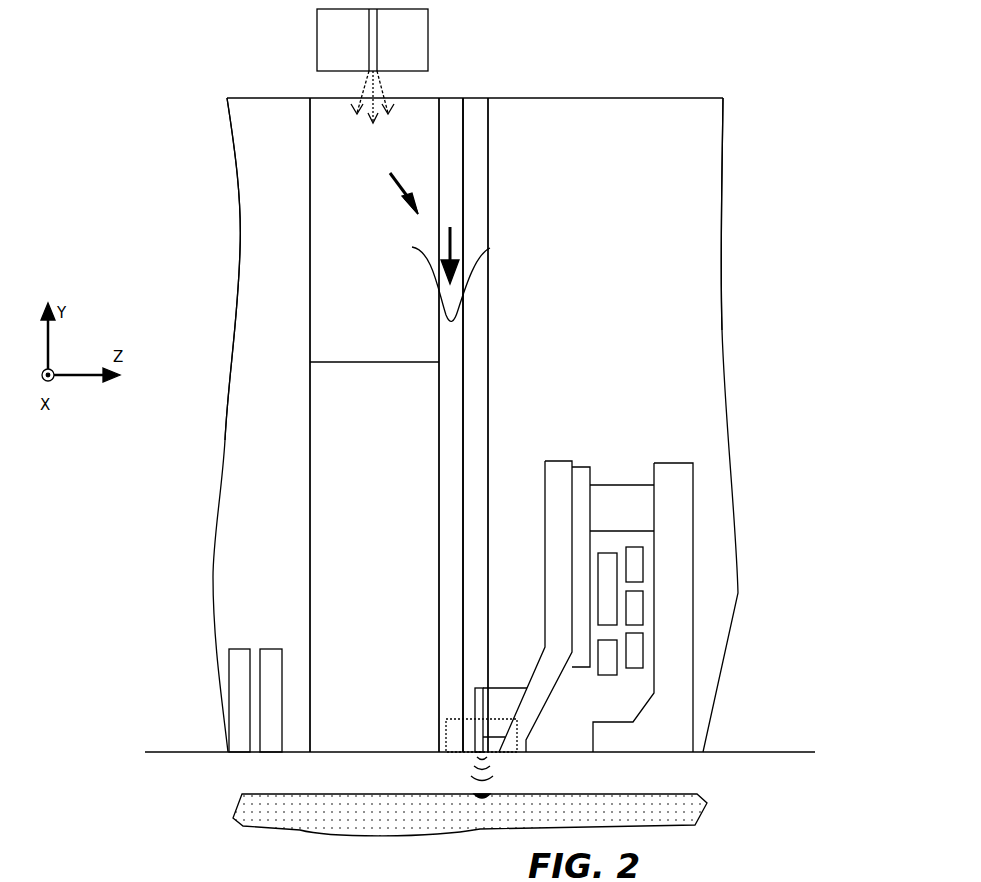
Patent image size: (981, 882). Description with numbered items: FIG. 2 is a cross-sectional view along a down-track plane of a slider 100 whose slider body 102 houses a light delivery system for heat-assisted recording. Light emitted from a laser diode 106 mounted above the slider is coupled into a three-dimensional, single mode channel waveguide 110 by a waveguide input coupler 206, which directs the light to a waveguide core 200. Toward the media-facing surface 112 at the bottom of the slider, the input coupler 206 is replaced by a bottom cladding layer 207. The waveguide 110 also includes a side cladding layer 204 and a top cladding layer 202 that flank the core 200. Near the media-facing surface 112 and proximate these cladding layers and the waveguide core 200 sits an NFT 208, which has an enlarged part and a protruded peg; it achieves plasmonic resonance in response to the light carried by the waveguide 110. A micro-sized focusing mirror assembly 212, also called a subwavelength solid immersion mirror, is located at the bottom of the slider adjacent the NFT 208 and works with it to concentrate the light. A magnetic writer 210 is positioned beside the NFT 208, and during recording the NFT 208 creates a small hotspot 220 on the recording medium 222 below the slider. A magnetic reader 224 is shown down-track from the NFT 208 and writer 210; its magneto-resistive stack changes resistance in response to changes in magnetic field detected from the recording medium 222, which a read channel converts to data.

The deposition system 100 is at (176, 206).
The slider body 102 is at (670, 97).
The laser diode 106 is at (316, 28).
The channel waveguide 110 is at (528, 200).
The media-facing surface 112 is at (800, 754).
The waveguide core 200 is at (457, 108).
The top cladding layer 202 is at (528, 120).
The side cladding layer 204 is at (487, 105).
The waveguide input coupler 206 is at (324, 125).
The bottom cladding layer 207 is at (310, 505).
The NFT 208 is at (474, 694).
The magnetic writer 210 is at (601, 422).
The micro-sized focusing mirror assembly 212 is at (446, 739).
The hotspot 220 is at (482, 798).
The recording medium 222 is at (655, 794).
The magnetic reader 224 is at (234, 680).